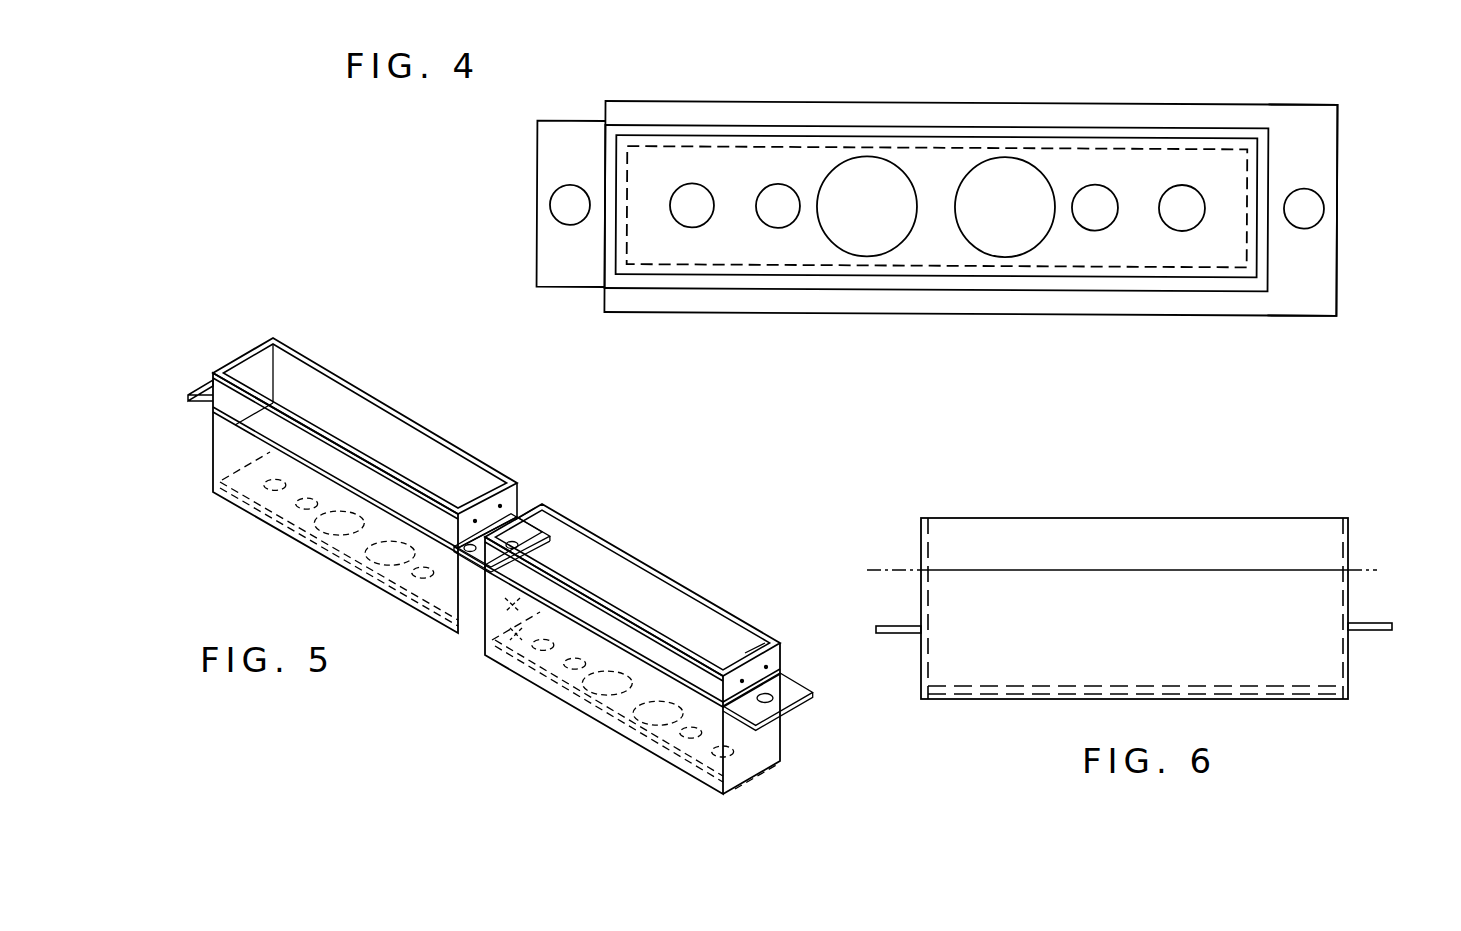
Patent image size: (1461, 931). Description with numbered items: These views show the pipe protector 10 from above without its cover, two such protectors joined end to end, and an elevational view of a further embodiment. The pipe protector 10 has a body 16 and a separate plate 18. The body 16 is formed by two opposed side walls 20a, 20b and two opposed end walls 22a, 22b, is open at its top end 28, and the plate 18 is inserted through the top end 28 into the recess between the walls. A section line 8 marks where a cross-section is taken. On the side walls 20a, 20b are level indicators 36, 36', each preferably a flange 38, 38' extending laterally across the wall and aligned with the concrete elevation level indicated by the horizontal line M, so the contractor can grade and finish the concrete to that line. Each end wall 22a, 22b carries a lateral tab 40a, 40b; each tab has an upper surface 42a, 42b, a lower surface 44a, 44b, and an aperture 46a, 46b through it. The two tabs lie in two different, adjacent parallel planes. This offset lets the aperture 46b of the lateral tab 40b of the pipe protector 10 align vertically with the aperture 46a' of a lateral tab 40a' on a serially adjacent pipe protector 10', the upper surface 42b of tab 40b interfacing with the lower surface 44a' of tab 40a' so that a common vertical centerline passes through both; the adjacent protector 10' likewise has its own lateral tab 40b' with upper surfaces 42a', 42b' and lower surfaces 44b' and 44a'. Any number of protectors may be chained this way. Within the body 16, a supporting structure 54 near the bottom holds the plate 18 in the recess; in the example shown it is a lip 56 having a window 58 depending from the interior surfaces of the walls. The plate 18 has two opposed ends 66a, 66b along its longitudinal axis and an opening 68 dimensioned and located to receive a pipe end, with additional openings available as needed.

In FIG. 4, the pipe protector 10 is at (971, 205).
In FIG. 5, the pipe protector 10 is at (638, 649).
In FIG. 4, the section line 8- 8 is at (565, 205).
In FIG. 5, the serially adjacent pipe protector 10' is at (365, 485).
In FIG. 5, the body 16 is at (680, 576).
In FIG. 5, the plate 18 is at (747, 782).
In FIG. 4, the side wall 20a is at (1071, 128).
In FIG. 4, the side wall 20b is at (1133, 274).
In FIG. 4, the end wall 22a is at (1262, 255).
In FIG. 4, the end wall 22b is at (627, 153).
In FIG. 5, the top end 28 is at (760, 633).
In FIG. 4, the level indicator 36 is at (809, 331).
In FIG. 4, the level indicator 36' is at (880, 76).
In FIG. 4, the flange 38 is at (928, 345).
In FIG. 4, the flange 38' is at (965, 77).
In FIG. 4, the lateral tab 40a is at (1330, 178).
In FIG. 5, the lateral tab 40a is at (808, 704).
In FIG. 4, the lateral tab 40b is at (530, 223).
In FIG. 5, the lateral tab 40b is at (485, 602).
In FIG. 5, the lateral tab 40a' is at (557, 510).
In FIG. 5, the lateral tab 40b' is at (175, 360).
In FIG. 4, the upper surface 42a is at (1370, 239).
In FIG. 5, the upper surface 42a is at (829, 635).
In FIG. 4, the upper surface 42b is at (480, 243).
In FIG. 5, the upper surface 42b is at (435, 502).
In FIG. 5, the upper surface 42a' is at (559, 461).
In FIG. 5, the upper surface 42b' is at (210, 335).
In FIG. 4, the lower surface 44a is at (1357, 317).
In FIG. 5, the lower surface 44a is at (843, 741).
In FIG. 4, the lower surface 44b is at (570, 322).
In FIG. 5, the lower surface 44b is at (407, 628).
In FIG. 5, the lower surface 44a' is at (651, 506).
In FIG. 5, the lower surface 44b' is at (171, 445).
In FIG. 4, the aperture 46a is at (1349, 163).
In FIG. 5, the aperture 46a is at (821, 675).
In FIG. 4, the aperture 46b is at (574, 192).
In FIG. 5, the aperture 46b is at (517, 657).
In FIG. 5, the aperture 46a' is at (497, 474).
In FIG. 4, the supporting structure 54 is at (713, 268).
In FIG. 4, the lip 56 is at (1052, 261).
In FIG. 4, the window 58 is at (1091, 240).
In FIG. 4, the end of plate 66a is at (1237, 272).
In FIG. 4, the end of plate 66b is at (617, 235).
In FIG. 4, the opening 68 is at (858, 238).
In FIG. 6, the horizontal line M is at (958, 566).